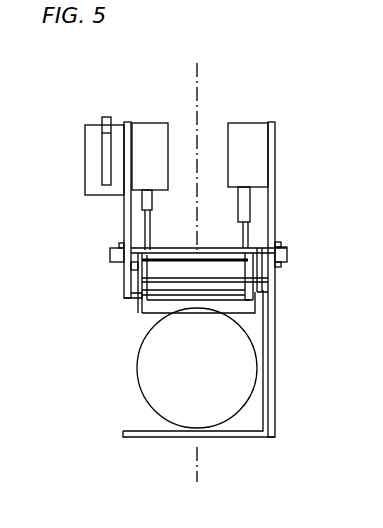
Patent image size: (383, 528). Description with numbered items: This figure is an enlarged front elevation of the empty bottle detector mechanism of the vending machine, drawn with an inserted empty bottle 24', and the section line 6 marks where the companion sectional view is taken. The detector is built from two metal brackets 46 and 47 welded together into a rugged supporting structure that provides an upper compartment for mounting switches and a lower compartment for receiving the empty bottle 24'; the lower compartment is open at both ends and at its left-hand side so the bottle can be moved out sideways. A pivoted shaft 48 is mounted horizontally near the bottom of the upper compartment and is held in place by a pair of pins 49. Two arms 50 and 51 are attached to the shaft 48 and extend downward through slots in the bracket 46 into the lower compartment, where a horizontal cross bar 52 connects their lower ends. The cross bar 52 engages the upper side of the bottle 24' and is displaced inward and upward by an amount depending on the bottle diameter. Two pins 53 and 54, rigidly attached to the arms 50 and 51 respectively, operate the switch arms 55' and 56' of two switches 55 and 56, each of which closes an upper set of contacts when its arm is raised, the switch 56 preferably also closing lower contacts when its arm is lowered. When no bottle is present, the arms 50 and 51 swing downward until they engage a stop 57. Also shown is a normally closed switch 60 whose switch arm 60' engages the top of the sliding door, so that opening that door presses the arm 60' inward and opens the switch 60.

The section line 6- 6 is at (190, 79).
The empty bottle 24' is at (170, 368).
The metal bracket 46 is at (123, 283).
The metal bracket 47 is at (275, 180).
The pivoted shaft 48 is at (257, 250).
The pins 49 is at (120, 244).
The arm 50 is at (131, 267).
The arm 51 is at (262, 270).
The horizontal cross bar 52 is at (150, 317).
The pin 53 is at (157, 232).
The pin 54 is at (245, 233).
The switch 55 is at (151, 143).
The switch arm 55' is at (164, 203).
The switch 56 is at (248, 141).
The switch arm 56' is at (226, 204).
The stop 57 is at (202, 272).
The normally closed switch 60 is at (81, 160).
The switch arm 60' is at (90, 135).